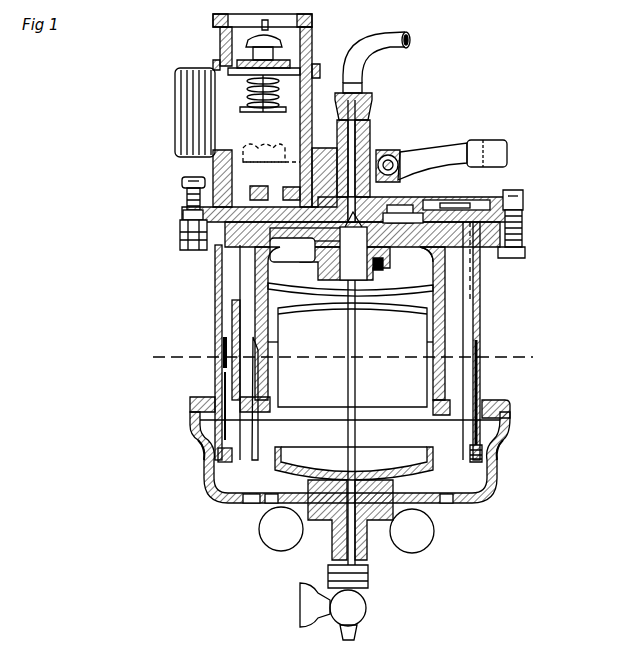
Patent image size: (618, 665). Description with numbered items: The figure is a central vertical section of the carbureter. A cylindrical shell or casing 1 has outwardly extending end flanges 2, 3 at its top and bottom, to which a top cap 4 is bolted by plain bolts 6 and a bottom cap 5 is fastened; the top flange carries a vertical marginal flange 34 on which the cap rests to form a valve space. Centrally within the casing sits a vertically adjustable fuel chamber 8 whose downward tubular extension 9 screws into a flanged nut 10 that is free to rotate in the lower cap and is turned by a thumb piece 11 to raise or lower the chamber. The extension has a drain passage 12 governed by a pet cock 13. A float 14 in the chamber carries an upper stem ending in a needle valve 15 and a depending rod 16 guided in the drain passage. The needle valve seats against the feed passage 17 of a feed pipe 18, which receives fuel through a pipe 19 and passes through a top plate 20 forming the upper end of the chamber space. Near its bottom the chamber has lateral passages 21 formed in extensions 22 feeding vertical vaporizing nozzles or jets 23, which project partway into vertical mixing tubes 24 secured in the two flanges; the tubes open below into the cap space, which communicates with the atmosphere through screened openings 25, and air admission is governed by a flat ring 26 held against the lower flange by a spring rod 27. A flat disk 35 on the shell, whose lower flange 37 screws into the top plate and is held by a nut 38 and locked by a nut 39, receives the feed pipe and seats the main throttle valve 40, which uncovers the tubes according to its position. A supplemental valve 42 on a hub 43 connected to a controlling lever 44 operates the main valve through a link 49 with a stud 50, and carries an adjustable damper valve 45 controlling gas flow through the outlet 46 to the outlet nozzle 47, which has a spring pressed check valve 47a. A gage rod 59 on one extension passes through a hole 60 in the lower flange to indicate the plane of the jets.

The cylindrical shell or casing 1 is at (439, 306).
The top end flange 2 is at (526, 242).
The bottom end flange 3 is at (508, 408).
The top cap 4 is at (498, 197).
The bottom cap 5 is at (499, 477).
The plain bolts 6 is at (524, 194).
The fuel chamber 8 is at (354, 436).
The downward tubular extension 9 is at (370, 558).
The flanged nut 10 is at (330, 530).
The thumb piece 11 is at (262, 537).
The drain passage 12 is at (334, 572).
The pet cock 13 is at (364, 618).
The float 14 is at (352, 355).
The needle valve 15 is at (330, 266).
The depending stem or rod 16 is at (356, 436).
The feed passage 17 is at (340, 124).
The supply or feed pipe 18 is at (371, 128).
The supply pipe 19 is at (397, 34).
The top plate 20 is at (292, 250).
The lateral passages 21 is at (454, 472).
The lateral extensions 22 is at (456, 464).
The vaporizing nozzles or jets 23 is at (223, 351).
The mixing chambers or tubes 24 is at (216, 300).
The screened openings 25 is at (244, 504).
The flat circular plate or ring 26 is at (192, 404).
The spring rod or wire 27 is at (206, 420).
The vertical marginal flange 34 is at (183, 214).
The flat plate or disk 35 is at (200, 238).
The lower flange 37 is at (390, 262).
The nut 38 is at (310, 204).
The lock nut 39 is at (384, 268).
The main throttle valve 40 is at (440, 252).
The supplemental valve 42 is at (186, 196).
The hub 43 is at (380, 151).
The controlling lever 44 is at (452, 150).
The damper valve 45 is at (254, 176).
The outlet 46 is at (258, 200).
The outlet nozzle 47 is at (176, 92).
The spring pressed check valve 47a is at (308, 78).
The link 49 is at (465, 200).
The stud 50 is at (512, 220).
The gage rod 59 is at (252, 370).
The hole 60 is at (258, 394).